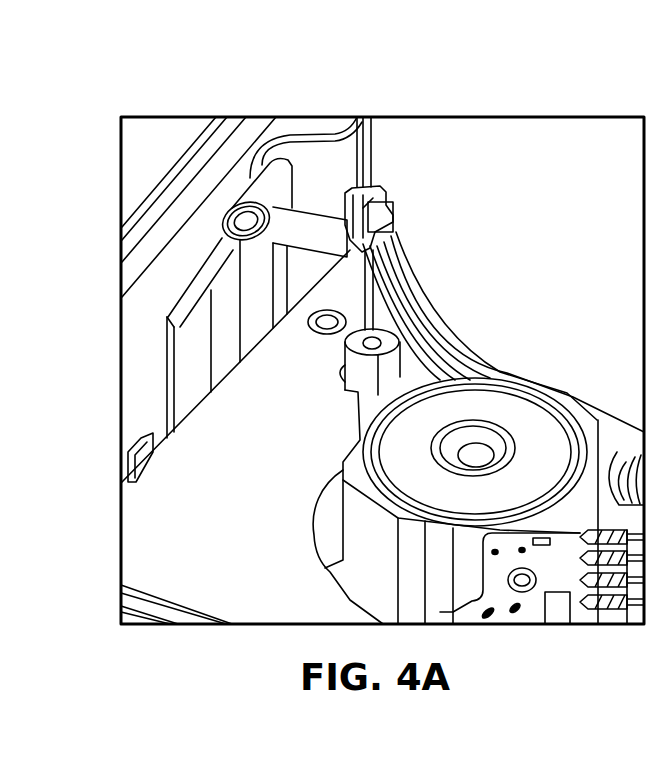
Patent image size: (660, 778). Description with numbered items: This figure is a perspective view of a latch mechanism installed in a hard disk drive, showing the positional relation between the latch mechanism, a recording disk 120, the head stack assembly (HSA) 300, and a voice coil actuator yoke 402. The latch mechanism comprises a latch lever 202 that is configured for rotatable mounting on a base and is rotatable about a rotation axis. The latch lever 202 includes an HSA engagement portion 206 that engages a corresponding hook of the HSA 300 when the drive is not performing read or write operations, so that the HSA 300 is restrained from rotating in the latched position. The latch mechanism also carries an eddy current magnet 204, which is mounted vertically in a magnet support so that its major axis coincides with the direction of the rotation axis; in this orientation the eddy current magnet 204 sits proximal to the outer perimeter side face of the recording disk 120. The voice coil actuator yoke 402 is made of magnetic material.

The recording disk 120 is at (615, 155).
The latch lever 202 is at (206, 270).
The eddy current magnet 204 is at (386, 199).
The HSA engagement portion 206 is at (207, 356).
The head stack assembly 300 is at (587, 515).
The voice coil actuator yoke 402 is at (188, 573).